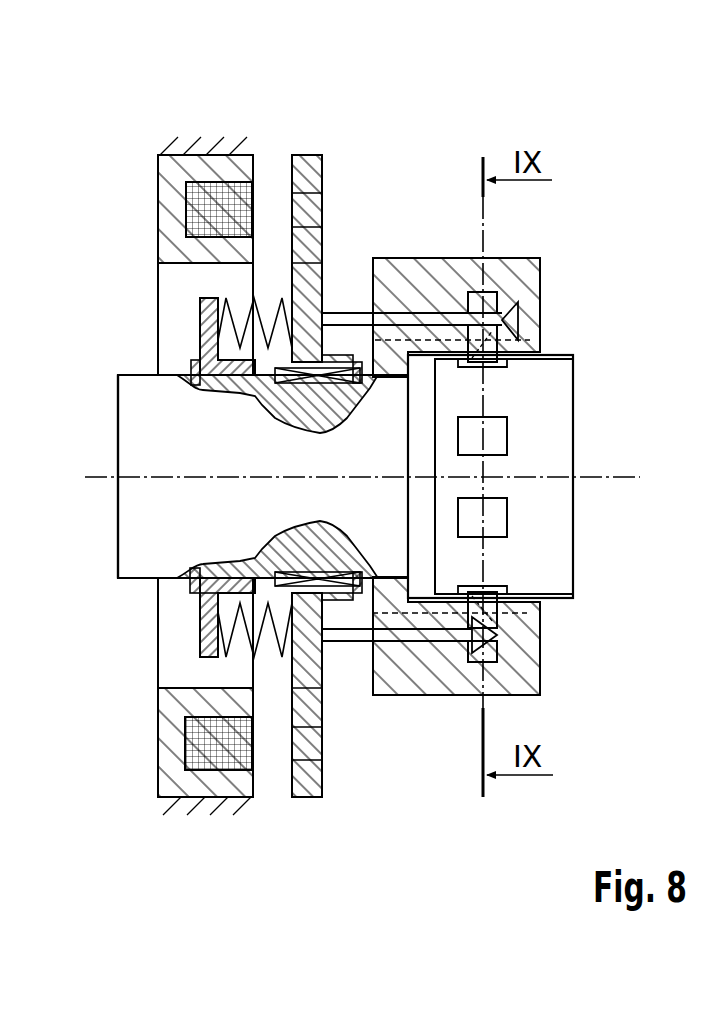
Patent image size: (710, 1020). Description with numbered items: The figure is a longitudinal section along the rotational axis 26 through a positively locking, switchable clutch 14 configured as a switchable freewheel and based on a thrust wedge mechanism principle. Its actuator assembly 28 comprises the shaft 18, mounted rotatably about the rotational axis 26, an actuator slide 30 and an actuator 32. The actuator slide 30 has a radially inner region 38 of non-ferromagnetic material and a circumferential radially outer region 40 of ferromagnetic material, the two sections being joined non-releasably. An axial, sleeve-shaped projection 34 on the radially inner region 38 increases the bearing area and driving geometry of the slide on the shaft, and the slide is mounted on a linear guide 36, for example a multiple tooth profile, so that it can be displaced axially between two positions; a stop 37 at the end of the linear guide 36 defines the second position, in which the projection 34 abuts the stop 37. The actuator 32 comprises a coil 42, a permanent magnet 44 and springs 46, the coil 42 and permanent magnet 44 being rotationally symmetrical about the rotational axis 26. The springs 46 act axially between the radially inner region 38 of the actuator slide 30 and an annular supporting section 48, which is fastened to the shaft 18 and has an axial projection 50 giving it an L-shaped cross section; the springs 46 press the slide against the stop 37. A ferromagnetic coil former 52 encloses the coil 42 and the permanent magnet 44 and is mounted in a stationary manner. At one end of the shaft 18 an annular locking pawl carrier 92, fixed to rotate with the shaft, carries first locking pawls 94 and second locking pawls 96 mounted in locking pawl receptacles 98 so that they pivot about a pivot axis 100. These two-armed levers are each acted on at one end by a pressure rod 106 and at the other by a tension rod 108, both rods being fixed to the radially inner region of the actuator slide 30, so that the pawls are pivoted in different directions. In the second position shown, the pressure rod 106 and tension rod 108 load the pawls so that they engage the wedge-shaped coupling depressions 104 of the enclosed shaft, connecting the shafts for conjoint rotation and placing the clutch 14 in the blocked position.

The positively locking, switchable clutch 14 is at (108, 146).
The shaft 18 is at (140, 557).
The rotational axis 26 is at (85, 477).
The actuator assembly 28 is at (257, 128).
The actuator slide 30 is at (303, 818).
The actuator 32 is at (130, 697).
The axial sleeve-shaped projection 34 is at (220, 347).
The linear guide 36 is at (267, 392).
The stop 37 is at (190, 368).
The radially inner region 38 is at (297, 277).
The radially outer region 40 is at (316, 705).
The coil 42 is at (217, 750).
The permanent magnet 44 is at (315, 752).
The springs 46 is at (200, 642).
The supporting section 48 is at (200, 647).
The axial projection 50 is at (282, 543).
The coil former 52 is at (177, 778).
The locking pawl carrier 92 is at (530, 264).
The first locking pawls 94 is at (520, 692).
The second locking pawls 96 is at (497, 297).
The locking pawl receptacles 98 is at (530, 340).
The pivot axis 100 is at (523, 328).
The coupling depressions 104 is at (508, 365).
The pressure rod 106 is at (407, 313).
The tension rod 108 is at (432, 317).